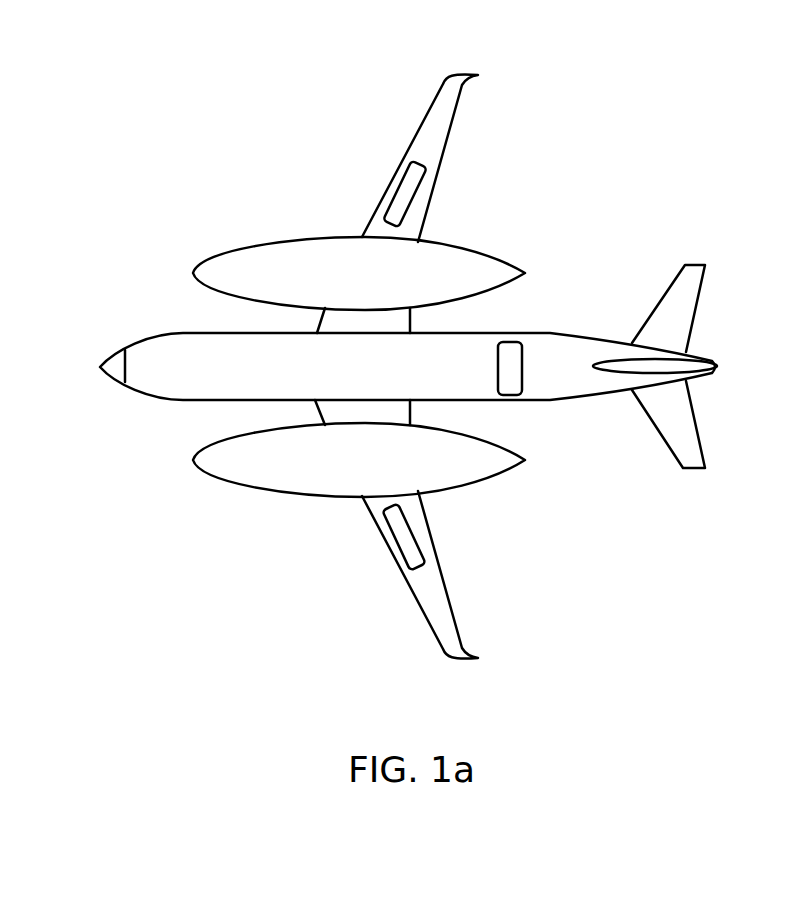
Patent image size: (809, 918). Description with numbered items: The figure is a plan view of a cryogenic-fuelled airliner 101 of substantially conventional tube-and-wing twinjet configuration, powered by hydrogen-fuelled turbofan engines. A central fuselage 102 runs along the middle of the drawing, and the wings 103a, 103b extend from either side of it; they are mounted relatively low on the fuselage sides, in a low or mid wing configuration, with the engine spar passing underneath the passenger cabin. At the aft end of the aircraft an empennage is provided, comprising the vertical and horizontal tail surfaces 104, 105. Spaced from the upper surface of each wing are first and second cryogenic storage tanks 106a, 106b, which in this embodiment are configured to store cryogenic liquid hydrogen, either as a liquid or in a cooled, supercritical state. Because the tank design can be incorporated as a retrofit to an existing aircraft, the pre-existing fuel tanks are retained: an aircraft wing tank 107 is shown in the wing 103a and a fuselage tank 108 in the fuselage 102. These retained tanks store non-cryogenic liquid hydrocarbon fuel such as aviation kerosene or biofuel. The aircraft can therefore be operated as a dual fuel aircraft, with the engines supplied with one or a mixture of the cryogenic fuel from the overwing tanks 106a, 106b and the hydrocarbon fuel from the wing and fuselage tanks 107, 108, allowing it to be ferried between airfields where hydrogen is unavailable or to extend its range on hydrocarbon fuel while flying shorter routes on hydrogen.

The airliner 101 is at (536, 163).
The central fuselage 102 is at (557, 332).
The wing 103a is at (412, 575).
The wing 103b is at (410, 137).
The vertical tail surface 104 is at (627, 368).
The horizontal tail surface 105 is at (694, 321).
The first cryogenic storage tank 106a is at (250, 487).
The second cryogenic storage tank 106b is at (277, 243).
The aircraft wing tank 107 is at (425, 547).
The fuselage tank 108 is at (510, 357).